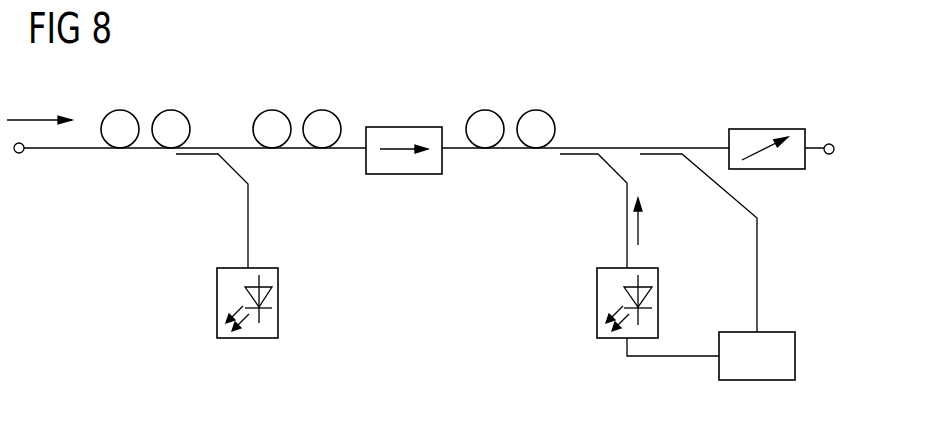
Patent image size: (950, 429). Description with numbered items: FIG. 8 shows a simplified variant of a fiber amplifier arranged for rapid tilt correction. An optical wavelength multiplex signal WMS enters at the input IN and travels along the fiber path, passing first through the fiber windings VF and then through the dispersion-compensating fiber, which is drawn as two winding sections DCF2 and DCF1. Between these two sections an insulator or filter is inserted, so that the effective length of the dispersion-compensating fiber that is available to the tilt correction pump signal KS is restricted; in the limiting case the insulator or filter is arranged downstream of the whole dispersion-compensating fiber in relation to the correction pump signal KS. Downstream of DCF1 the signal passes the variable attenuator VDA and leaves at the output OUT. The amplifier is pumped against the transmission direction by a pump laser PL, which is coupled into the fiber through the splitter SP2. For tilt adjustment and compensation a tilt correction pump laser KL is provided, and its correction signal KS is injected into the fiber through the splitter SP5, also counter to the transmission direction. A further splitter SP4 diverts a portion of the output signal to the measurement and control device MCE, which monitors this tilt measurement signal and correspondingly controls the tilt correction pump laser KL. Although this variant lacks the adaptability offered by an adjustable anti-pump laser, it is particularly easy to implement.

The optical wavelength multiplex signal WMS is at (39, 104).
The input IN is at (22, 164).
The pre-amplifier fiber VF is at (145, 114).
The dispersion-compensating fiber DCF2 is at (303, 111).
The dispersion-compensating fiber DCF1 is at (516, 111).
The variable optical attenuator VDA is at (767, 132).
The output OUT is at (855, 150).
The splitter SP2 is at (210, 211).
The splitter 5 SP5 is at (588, 211).
The splitter 4 SP4 is at (698, 243).
The correction signal KS is at (653, 222).
The pump laser PL is at (217, 293).
The tilt correction pump laser KL is at (597, 297).
The measurement and control device MCE is at (757, 356).